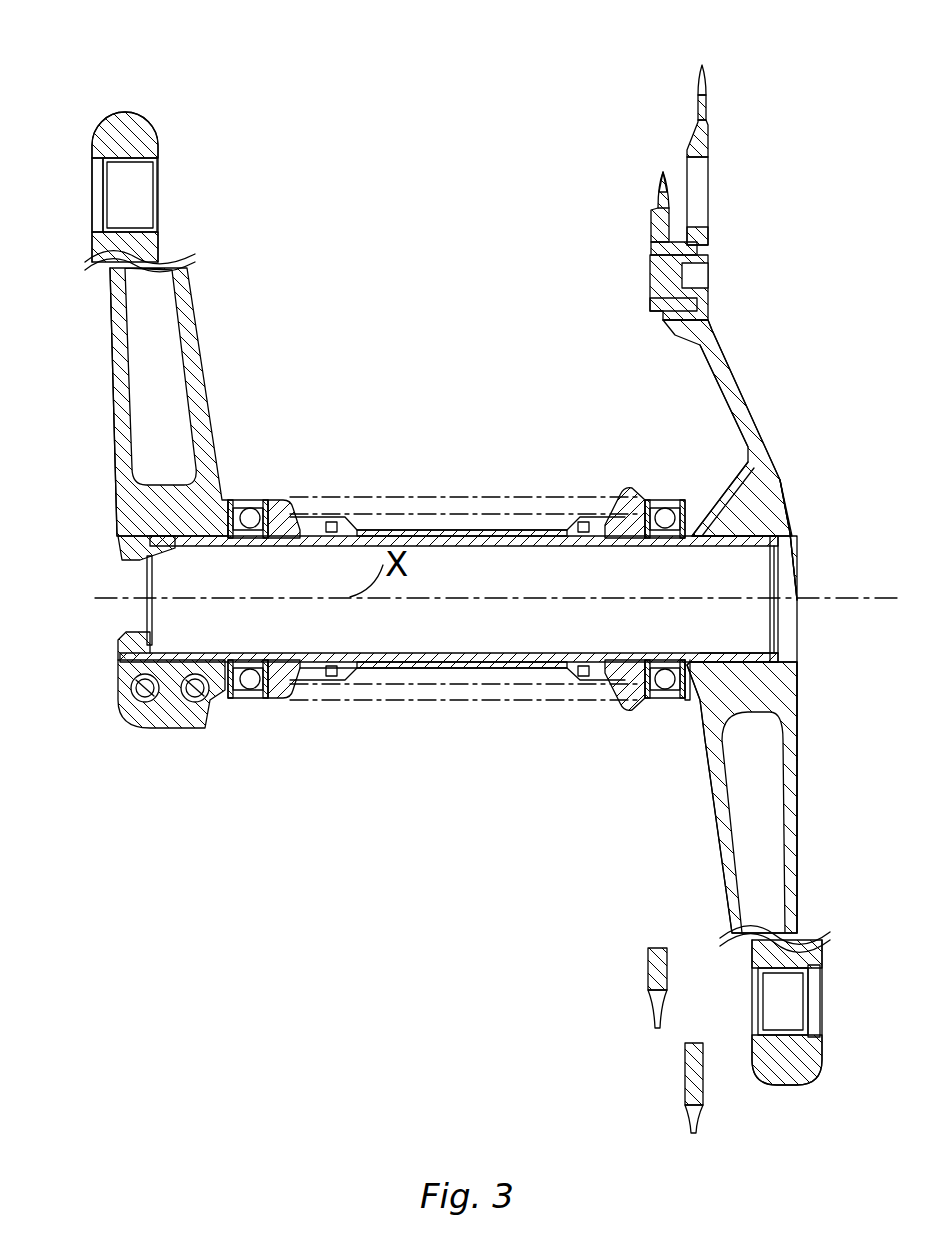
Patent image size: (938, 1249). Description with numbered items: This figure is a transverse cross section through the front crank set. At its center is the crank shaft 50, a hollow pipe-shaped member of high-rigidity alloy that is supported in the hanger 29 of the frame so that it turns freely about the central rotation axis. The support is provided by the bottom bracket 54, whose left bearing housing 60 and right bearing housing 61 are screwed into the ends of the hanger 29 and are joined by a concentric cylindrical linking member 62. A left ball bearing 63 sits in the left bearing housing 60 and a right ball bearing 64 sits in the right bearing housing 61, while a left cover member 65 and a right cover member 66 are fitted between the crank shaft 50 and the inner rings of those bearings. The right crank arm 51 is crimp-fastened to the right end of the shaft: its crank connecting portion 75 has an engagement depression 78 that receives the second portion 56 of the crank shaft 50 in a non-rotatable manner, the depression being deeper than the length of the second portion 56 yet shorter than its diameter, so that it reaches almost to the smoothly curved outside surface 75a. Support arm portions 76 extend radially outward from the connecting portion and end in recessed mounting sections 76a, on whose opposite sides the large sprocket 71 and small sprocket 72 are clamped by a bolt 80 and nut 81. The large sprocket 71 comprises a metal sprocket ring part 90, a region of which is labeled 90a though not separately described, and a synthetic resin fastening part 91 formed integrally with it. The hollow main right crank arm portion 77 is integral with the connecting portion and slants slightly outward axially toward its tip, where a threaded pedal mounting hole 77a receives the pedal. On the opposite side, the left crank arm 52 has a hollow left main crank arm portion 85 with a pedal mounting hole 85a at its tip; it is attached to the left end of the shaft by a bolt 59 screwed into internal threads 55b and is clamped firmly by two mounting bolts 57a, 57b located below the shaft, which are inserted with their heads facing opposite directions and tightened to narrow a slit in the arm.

The hanger 29 is at (480, 495).
The crank shaft 50 is at (400, 536).
The right crank arm 51 is at (768, 414).
The left crank arm 52 is at (214, 362).
The bottom bracket 54 is at (627, 487).
The internal threads 55b is at (125, 560).
The second portion 56 is at (745, 538).
The mounting bolt 57a is at (130, 693).
The mounting bolt 57b is at (187, 712).
The bolt 59 is at (118, 648).
The left bearing housing 60 is at (263, 490).
The right bearing housing 61 is at (662, 490).
The cylindrical linking member 62 is at (470, 665).
The left ball bearing 63 is at (246, 702).
The right ball bearing 64 is at (648, 700).
The left cover member 65 is at (198, 702).
The right cover member 66 is at (688, 680).
The sprocket 71 is at (718, 186).
The sprocket 72 is at (652, 227).
The crank connecting portion 75 is at (800, 548).
The outside surface 75a is at (795, 722).
The support arm portion 76 is at (722, 368).
The mounting section 76a is at (662, 204).
The main right crank arm portion 77 is at (790, 775).
The pedal mounting hole 77a is at (762, 997).
The engagement depression 78 is at (745, 655).
The bolt 80 is at (700, 270).
The nut 81 is at (651, 249).
The left main crank arm portion 85 is at (117, 362).
The pedal mounting hole 85a is at (128, 228).
The sprocket ring part 90 is at (714, 96).
The tooth tip 90a is at (707, 82).
The fastening part 91 is at (710, 150).